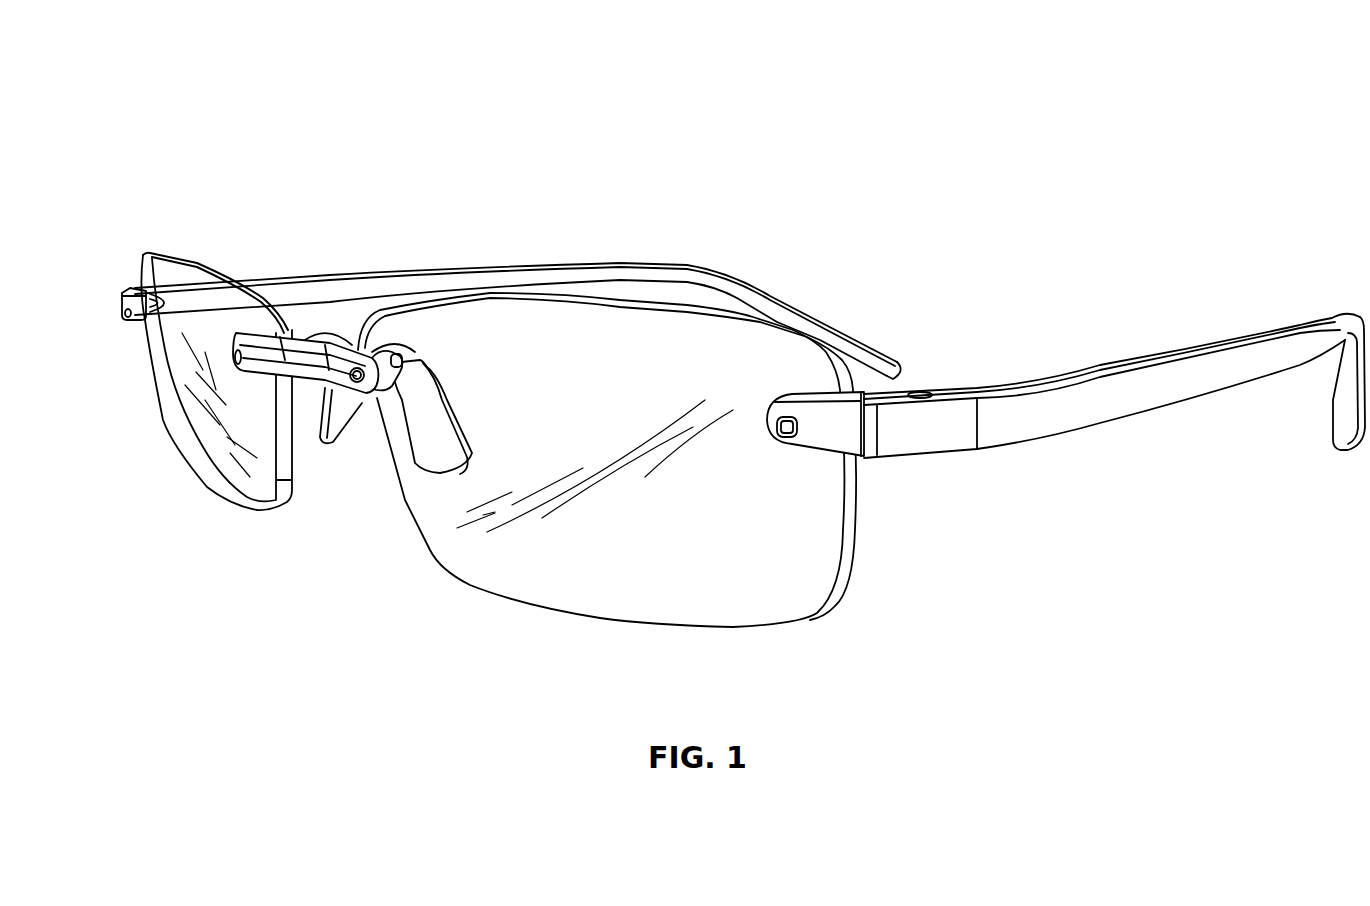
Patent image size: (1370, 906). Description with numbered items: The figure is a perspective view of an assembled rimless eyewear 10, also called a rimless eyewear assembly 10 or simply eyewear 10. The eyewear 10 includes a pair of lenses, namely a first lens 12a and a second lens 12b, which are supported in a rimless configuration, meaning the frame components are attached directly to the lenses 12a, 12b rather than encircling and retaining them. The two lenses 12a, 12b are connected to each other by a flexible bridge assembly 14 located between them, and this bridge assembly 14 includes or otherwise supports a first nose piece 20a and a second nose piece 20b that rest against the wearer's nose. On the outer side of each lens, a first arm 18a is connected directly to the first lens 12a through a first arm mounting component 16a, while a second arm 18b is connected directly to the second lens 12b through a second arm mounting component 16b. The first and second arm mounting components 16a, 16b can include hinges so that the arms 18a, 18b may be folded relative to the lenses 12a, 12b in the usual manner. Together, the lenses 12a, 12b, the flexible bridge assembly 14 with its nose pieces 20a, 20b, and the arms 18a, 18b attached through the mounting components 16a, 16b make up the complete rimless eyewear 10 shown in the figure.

The rimless eyewear 10 is at (191, 96).
The first lens 12a is at (227, 467).
The second lens 12b is at (650, 578).
The flexible bridge assembly 14 is at (296, 362).
The first arm mounting component 16a is at (123, 316).
The second arm mounting component 16b is at (868, 456).
The first arm 18a is at (450, 277).
The second arm 18b is at (1198, 352).
The first nose piece 20a is at (348, 413).
The second nose piece 20b is at (428, 425).